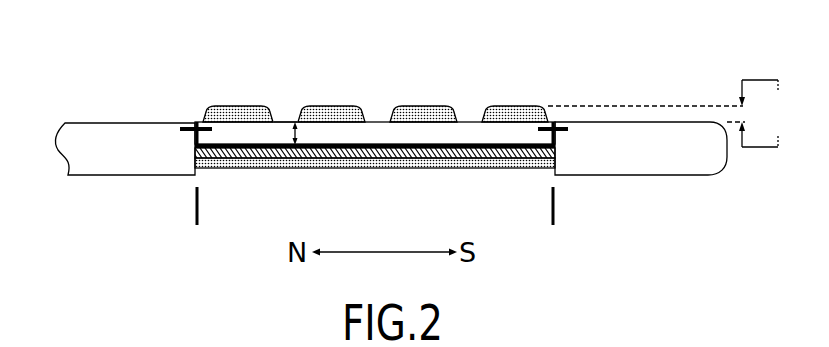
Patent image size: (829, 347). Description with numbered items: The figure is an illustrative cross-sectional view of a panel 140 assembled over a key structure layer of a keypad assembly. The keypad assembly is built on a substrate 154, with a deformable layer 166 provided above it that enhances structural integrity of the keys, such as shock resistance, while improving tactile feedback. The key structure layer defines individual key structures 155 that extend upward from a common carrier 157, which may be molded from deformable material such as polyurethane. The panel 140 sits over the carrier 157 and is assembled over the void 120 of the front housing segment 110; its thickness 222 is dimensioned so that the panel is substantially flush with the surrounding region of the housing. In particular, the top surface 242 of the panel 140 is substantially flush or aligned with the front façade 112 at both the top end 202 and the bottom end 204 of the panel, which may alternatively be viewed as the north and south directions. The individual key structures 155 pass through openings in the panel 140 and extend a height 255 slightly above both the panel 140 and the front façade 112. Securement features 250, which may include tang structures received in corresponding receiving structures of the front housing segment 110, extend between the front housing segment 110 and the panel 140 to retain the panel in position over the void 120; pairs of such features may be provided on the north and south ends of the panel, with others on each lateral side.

The front housing segment 110 is at (108, 90).
The front façade 112 is at (70, 122).
The void 120 is at (197, 122).
The panel 140 is at (285, 106).
The substrate 154 is at (195, 163).
The key structures 155 is at (240, 106).
The carrier 157 is at (195, 146).
The deformable layer 166 is at (195, 152).
The top end 202 is at (200, 207).
The bottom end 204 is at (556, 207).
The thickness 222 is at (294, 131).
The top surface 242 is at (376, 121).
The securement features 250 is at (182, 128).
The height 255 is at (670, 113).